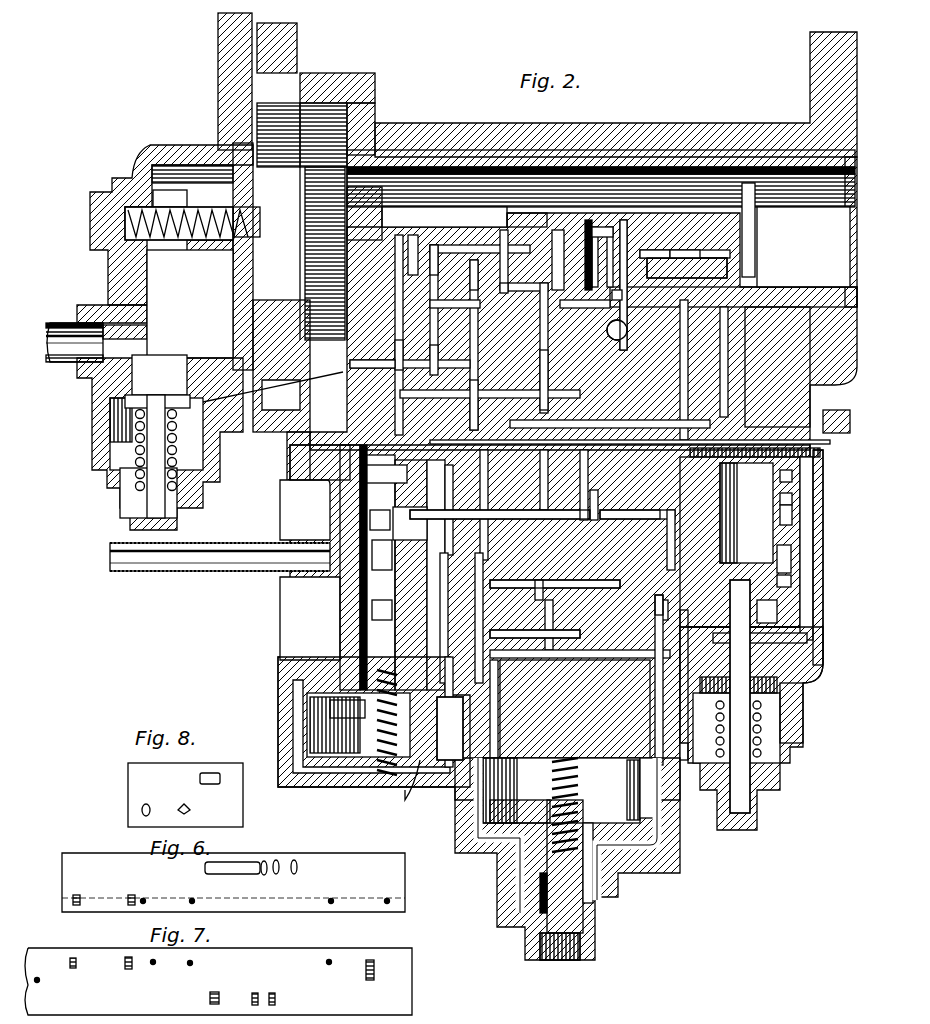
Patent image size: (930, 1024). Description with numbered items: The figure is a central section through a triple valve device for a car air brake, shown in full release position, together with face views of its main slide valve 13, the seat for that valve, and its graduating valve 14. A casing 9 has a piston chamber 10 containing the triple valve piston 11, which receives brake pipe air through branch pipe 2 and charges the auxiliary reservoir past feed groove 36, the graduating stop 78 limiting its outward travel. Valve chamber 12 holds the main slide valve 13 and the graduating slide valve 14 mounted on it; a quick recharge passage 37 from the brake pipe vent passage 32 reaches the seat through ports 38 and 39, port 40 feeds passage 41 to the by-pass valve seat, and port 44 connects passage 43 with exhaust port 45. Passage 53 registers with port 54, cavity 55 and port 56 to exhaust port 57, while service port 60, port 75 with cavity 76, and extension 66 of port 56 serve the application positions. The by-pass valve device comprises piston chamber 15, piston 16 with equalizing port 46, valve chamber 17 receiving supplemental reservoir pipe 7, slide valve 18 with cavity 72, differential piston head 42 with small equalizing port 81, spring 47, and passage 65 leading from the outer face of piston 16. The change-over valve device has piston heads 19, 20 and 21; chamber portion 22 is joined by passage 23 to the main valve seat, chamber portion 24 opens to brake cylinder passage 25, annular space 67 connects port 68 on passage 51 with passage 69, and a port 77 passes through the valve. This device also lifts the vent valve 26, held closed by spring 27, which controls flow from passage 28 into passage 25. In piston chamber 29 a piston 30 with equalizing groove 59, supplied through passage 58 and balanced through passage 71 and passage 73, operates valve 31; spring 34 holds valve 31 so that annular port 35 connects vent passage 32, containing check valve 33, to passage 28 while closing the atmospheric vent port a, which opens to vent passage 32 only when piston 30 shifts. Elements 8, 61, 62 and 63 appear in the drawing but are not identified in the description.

In FIG. 2, the branch pipe 2 is at (68, 350).
In FIG. 2, the supplemental reservoir pipe 7 is at (292, 565).
In FIG. 2, the valve member 8 is at (395, 548).
In FIG. 2, the casing 9 is at (680, 140).
In FIG. 2, the piston chamber 10 is at (268, 290).
In FIG. 2, the triple valve piston 11 is at (312, 312).
In FIG. 2, the valve chamber 12 is at (812, 280).
In FIG. 2, the main slide valve 13 is at (748, 250).
In FIG. 6, the main slide valve 13 is at (405, 872).
In FIG. 7, the main slide valve 13 is at (330, 965).
In FIG. 2, the graduating slide valve 14 is at (624, 225).
In FIG. 8, the graduating slide valve 14 is at (238, 808).
In FIG. 2, the piston chamber 15 is at (420, 755).
In FIG. 2, the piston 16 is at (445, 740).
In FIG. 2, the valve chamber 17 is at (340, 638).
In FIG. 2, the slide valve 18 is at (792, 520).
In FIG. 2, the piston head 19 is at (808, 480).
In FIG. 2, the piston head 20 is at (792, 503).
In FIG. 2, the piston head 21 is at (790, 583).
In FIG. 2, the chamber portion 22 is at (768, 452).
In FIG. 2, the passage 23 is at (750, 365).
In FIG. 7, the passage 23 is at (372, 978).
In FIG. 2, the chamber portion 24 is at (822, 442).
In FIG. 2, the brake cylinder passage 25 is at (797, 653).
In FIG. 2, the vent valve 26 is at (777, 700).
In FIG. 2, the spring 27 is at (790, 770).
In FIG. 2, the passage 28 is at (672, 843).
In FIG. 2, the piston chamber 29 is at (620, 760).
In FIG. 2, the piston 30 is at (530, 800).
In FIG. 2, the valve 31 is at (590, 912).
In FIG. 2, the brake pipe vent passage 32 is at (275, 390).
In FIG. 2, the check valve 33 is at (168, 372).
In FIG. 2, the spring 34 is at (592, 772).
In FIG. 2, the annular port 35 is at (612, 888).
In FIG. 2, the feed groove 36 is at (345, 110).
In FIG. 2, the quick recharge passage 37 is at (404, 354).
In FIG. 7, the quick recharge passage 37 is at (128, 968).
In FIG. 2, the port 38 is at (445, 268).
In FIG. 6, the port 38 is at (131, 895).
In FIG. 2, the port 39 is at (510, 218).
In FIG. 8, the port 39 is at (140, 812).
In FIG. 2, the port 40 is at (414, 240).
In FIG. 6, the port 40 is at (78, 895).
In FIG. 2, the passage 41 is at (372, 364).
In FIG. 7, the passage 41 is at (76, 966).
In FIG. 2, the differential piston head 42 is at (292, 462).
In FIG. 2, the passage 43 is at (575, 300).
In FIG. 2, the port 44 is at (450, 672).
In FIG. 6, the port 44 is at (192, 900).
In FIG. 2, the exhaust port 45 is at (505, 296).
In FIG. 7, the exhaust port 45 is at (192, 964).
In FIG. 2, the equalizing port 46 is at (358, 722).
In FIG. 2, the spring 47 is at (390, 738).
In FIG. 2, the passage 51 is at (605, 515).
In FIG. 2, the passage 53 is at (548, 380).
In FIG. 7, the passage 53 is at (274, 993).
In FIG. 2, the port 54 is at (648, 250).
In FIG. 6, the port 54 is at (278, 860).
In FIG. 2, the cavity 55 is at (596, 235).
In FIG. 8, the cavity 55 is at (218, 776).
In FIG. 2, the port 56 is at (664, 512).
In FIG. 6, the port 56 is at (265, 874).
In FIG. 7, the port 56 is at (40, 982).
In FIG. 2, the exhaust port 57 is at (630, 790).
In FIG. 7, the exhaust port 57 is at (218, 992).
In FIG. 2, the passage 58 is at (480, 390).
In FIG. 2, the equalizing groove 59 is at (578, 522).
In FIG. 2, the service port 60 is at (678, 250).
In FIG. 6, the service port 60 is at (309, 865).
In FIG. 2, the ball 61 is at (617, 335).
In FIG. 2, the valve 62 is at (380, 520).
In FIG. 2, the port 63 is at (440, 352).
In FIG. 7, the port 63 is at (256, 992).
In FIG. 2, the passage 65 is at (290, 708).
In FIG. 7, the passage 65 is at (155, 964).
In FIG. 6, the port extension 66 is at (244, 868).
In FIG. 2, the annular space 67 is at (790, 560).
In FIG. 2, the port 68 is at (668, 578).
In FIG. 2, the passage 69 is at (606, 584).
In FIG. 2, the passage 71 is at (565, 690).
In FIG. 2, the cavity 72 is at (408, 610).
In FIG. 2, the passage 73 is at (575, 633).
In FIG. 2, the port 75 is at (690, 258).
In FIG. 6, the port 75 is at (388, 898).
In FIG. 2, the cavity 76 is at (555, 235).
In FIG. 8, the cavity 76 is at (186, 808).
In FIG. 2, the port 77 is at (722, 512).
In FIG. 2, the graduating stop 78 is at (258, 215).
In FIG. 2, the equalizing port 81 is at (364, 448).
In FIG. 2, the atmospheric vent port a is at (592, 945).